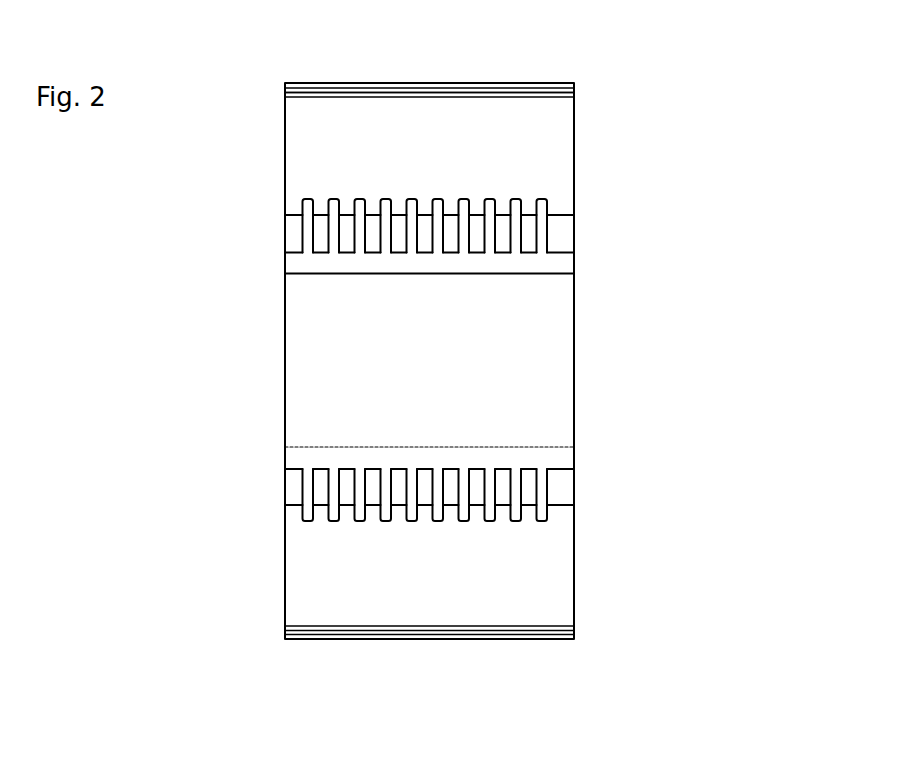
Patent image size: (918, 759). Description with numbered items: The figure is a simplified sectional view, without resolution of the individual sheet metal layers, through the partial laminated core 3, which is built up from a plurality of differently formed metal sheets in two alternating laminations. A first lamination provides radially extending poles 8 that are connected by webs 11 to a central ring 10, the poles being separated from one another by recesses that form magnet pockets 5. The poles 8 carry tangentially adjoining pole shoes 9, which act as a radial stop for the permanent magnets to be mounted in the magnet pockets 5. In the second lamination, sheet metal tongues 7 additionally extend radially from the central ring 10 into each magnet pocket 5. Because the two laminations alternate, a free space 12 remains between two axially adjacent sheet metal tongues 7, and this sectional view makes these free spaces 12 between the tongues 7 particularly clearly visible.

The partial laminated core 3 is at (708, 106).
The magnet pocket 5 is at (523, 572).
The sheet metal tongue 7 is at (543, 231).
The pole 8 is at (393, 83).
The pole shoe 9 is at (542, 92).
The central ring 10 is at (303, 262).
The web 11 is at (300, 486).
The free space 12 is at (322, 237).